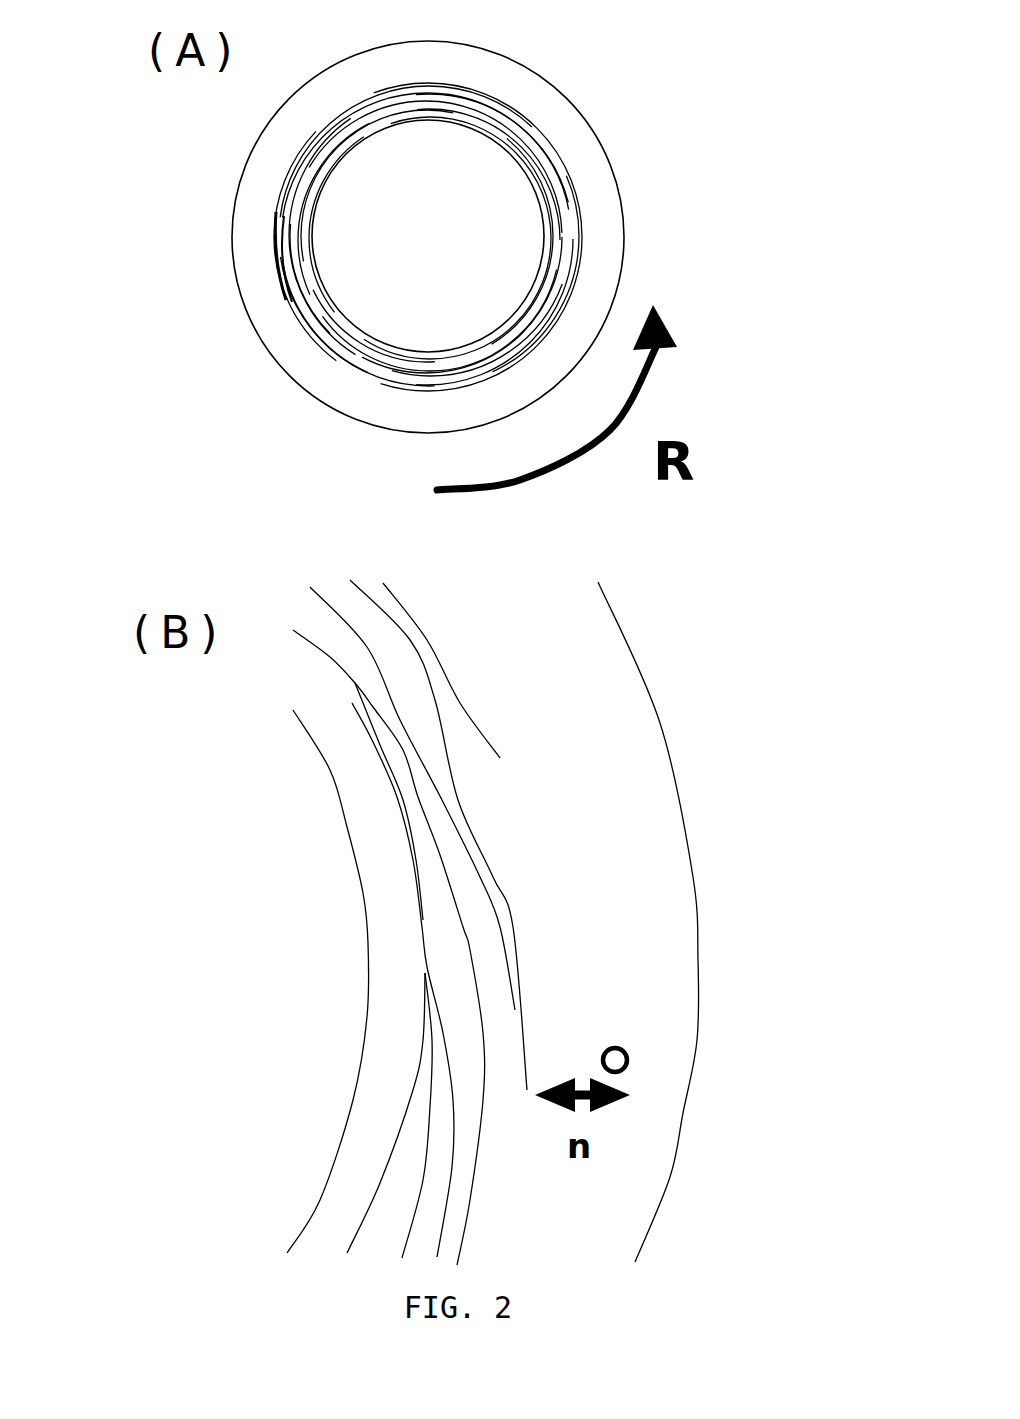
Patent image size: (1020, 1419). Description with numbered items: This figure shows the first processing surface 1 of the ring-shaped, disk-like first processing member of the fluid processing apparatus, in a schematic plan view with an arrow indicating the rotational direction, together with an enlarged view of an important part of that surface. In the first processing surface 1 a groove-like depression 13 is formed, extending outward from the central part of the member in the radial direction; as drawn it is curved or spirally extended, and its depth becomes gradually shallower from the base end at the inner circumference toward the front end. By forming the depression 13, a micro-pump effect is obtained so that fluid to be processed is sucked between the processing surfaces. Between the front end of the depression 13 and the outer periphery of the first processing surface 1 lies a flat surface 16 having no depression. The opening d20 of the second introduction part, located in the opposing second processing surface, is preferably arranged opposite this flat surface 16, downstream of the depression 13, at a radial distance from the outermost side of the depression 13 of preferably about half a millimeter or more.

The first processing surface 1 is at (296, 343).
The depression 13 is at (292, 270).
The flat surface 16 is at (550, 723).
The opening d20 is at (623, 1046).